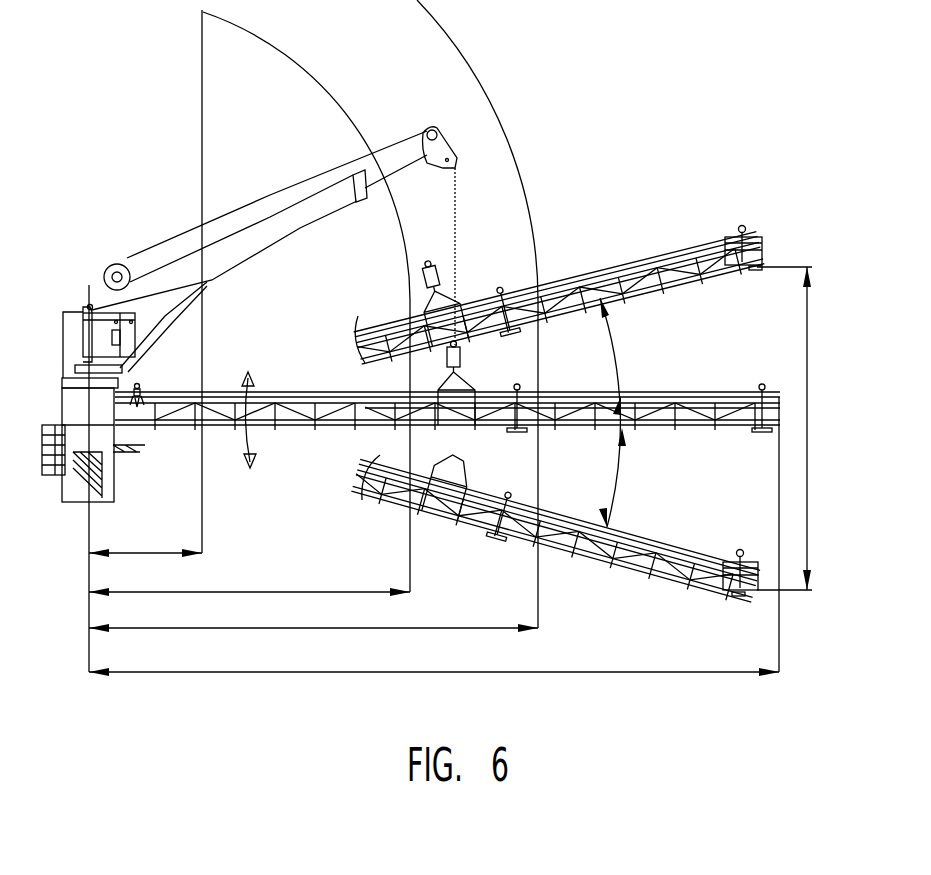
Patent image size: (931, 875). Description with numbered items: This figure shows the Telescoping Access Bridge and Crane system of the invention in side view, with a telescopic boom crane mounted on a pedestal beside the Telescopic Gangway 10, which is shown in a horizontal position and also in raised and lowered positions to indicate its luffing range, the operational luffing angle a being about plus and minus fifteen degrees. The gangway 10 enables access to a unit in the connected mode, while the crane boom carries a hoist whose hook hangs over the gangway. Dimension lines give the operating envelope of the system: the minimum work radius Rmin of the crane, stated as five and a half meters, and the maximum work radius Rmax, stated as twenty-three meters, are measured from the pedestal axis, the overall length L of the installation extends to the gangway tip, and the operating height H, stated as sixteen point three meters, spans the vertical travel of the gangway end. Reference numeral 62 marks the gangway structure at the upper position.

The Telescopic Gangway 10 is at (592, 177).
The conveyor boom 62 is at (720, 167).
The minimum work radius Rmin is at (145, 534).
The maximum work radius Rmax is at (313, 610).
The length L is at (434, 660).
The operating height H is at (796, 428).
The slewing angle a is at (622, 412).